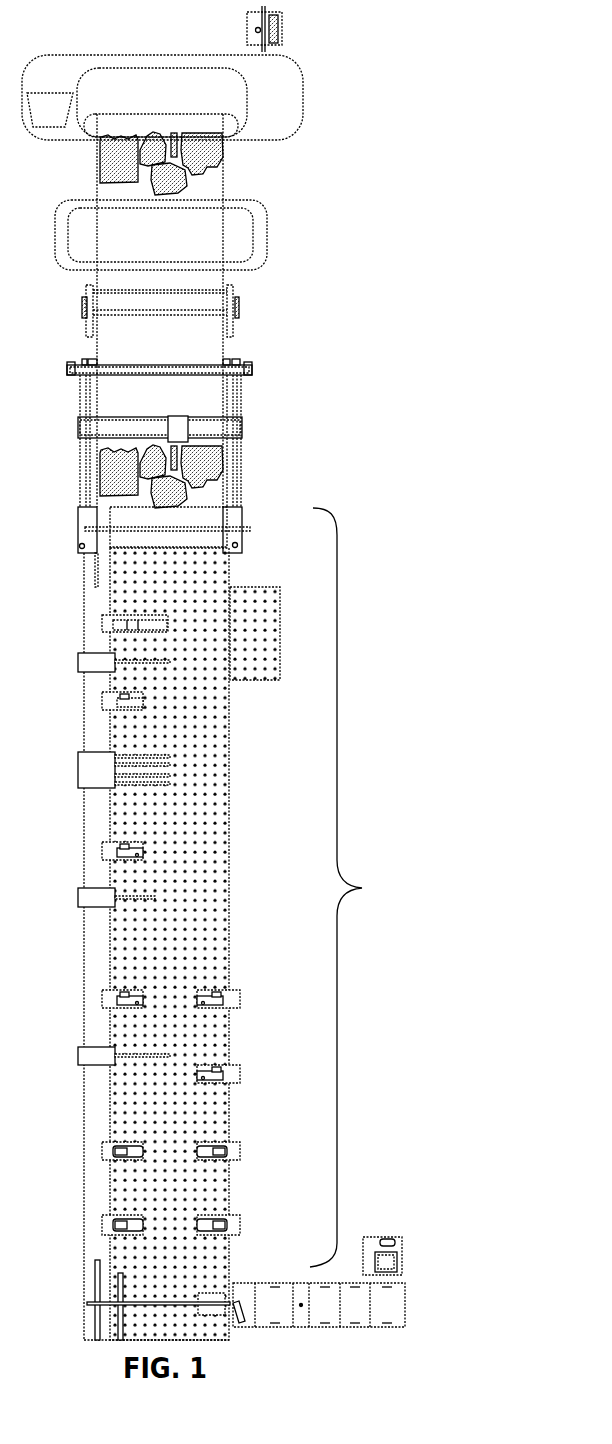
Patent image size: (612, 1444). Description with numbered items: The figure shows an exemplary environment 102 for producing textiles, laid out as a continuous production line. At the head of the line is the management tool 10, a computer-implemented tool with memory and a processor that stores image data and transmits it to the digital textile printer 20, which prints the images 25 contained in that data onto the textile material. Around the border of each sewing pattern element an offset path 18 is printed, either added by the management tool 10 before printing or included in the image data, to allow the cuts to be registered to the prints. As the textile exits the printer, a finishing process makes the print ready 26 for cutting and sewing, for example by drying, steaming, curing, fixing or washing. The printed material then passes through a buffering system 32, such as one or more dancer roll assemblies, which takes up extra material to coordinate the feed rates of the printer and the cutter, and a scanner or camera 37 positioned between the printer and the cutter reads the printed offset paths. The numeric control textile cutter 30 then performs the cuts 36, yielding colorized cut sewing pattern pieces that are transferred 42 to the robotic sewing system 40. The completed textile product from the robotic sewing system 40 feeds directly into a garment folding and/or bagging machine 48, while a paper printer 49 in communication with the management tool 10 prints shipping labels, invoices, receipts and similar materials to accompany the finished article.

The management tool 10 is at (282, 30).
The digital textile printer 20 is at (302, 100).
The offset path 18 is at (207, 173).
The image(s) 25 is at (217, 145).
The print ready finishing 26 is at (267, 238).
The buffering system 32 is at (240, 308).
The scanner or camera 37 is at (252, 370).
The numeric control textile cutter 30 is at (242, 430).
The cuts 36 is at (217, 480).
The cut sewing pattern pieces transfer 42 is at (243, 537).
The robotic sewing system 40 is at (238, 924).
The manufacturing system 102 is at (456, 813).
The paper printer 49 is at (402, 1255).
The garment folding and/or bagging machine 48 is at (405, 1305).